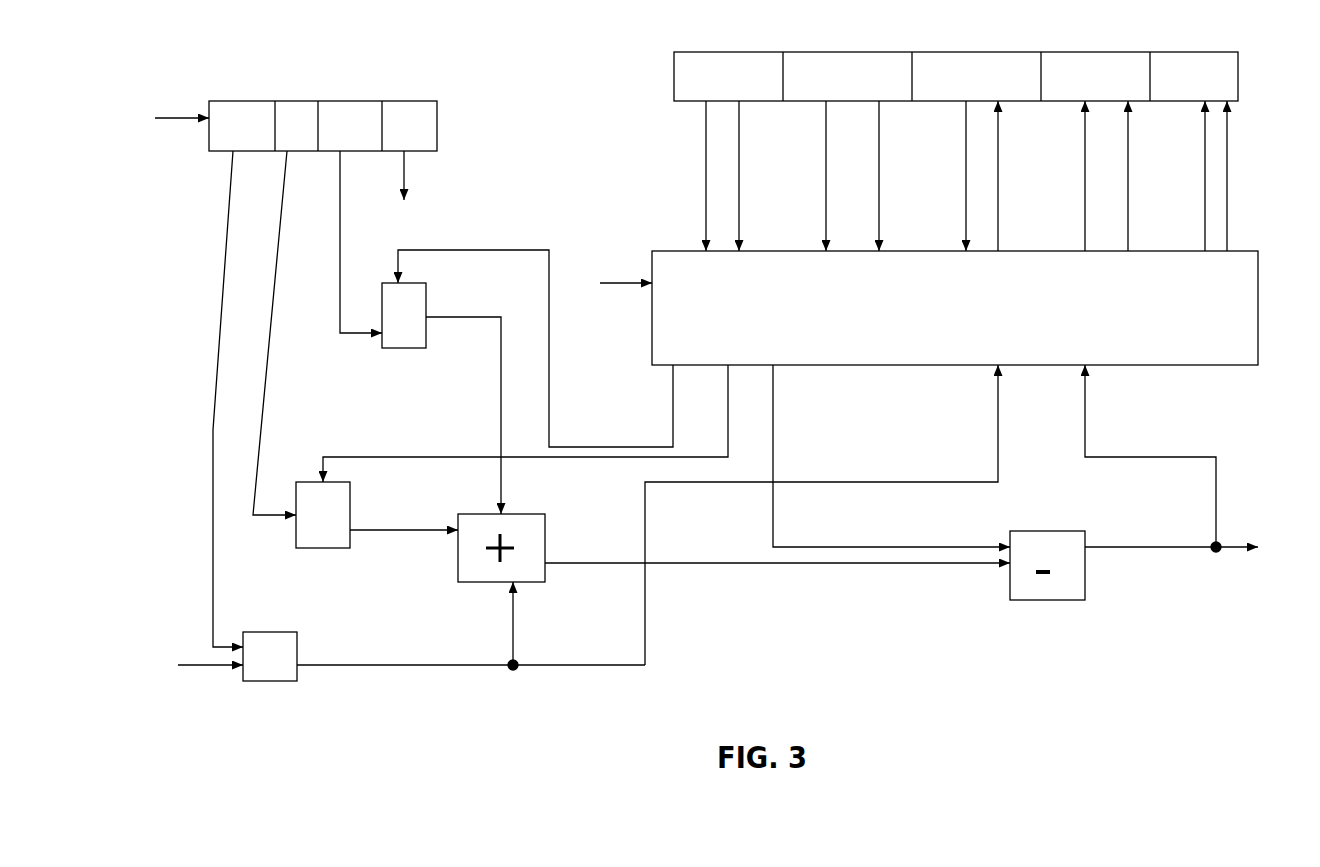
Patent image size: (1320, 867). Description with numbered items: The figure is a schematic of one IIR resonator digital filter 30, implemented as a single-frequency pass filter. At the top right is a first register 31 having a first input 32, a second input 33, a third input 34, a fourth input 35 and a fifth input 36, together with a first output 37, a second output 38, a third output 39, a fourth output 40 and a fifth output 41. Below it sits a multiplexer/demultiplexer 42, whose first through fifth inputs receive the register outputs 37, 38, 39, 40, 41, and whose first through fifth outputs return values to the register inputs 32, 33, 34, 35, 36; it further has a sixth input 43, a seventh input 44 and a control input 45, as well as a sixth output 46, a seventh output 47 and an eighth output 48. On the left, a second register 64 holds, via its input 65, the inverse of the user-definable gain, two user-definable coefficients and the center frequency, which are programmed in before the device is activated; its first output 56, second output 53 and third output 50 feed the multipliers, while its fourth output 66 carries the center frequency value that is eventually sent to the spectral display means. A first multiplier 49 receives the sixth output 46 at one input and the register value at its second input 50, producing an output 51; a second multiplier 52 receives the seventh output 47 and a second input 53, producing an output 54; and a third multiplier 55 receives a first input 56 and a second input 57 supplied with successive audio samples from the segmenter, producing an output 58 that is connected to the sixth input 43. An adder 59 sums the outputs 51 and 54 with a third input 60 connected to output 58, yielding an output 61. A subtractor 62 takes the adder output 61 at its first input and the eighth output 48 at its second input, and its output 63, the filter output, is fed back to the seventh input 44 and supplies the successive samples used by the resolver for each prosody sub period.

The IIR resonator digital filter 30 is at (1184, 663).
The first register 31 is at (674, 68).
The first input 32 is at (998, 118).
The second input 33 is at (1085, 201).
The third input 34 is at (1128, 118).
The fourth input 35 is at (1205, 201).
The fifth input 36 is at (1227, 118).
The first output 37 is at (706, 201).
The second output 38 is at (739, 118).
The third output 39 is at (826, 201).
The fourth output 40 is at (879, 118).
The fifth output 41 is at (966, 201).
The multiplexer/demultiplexer 42 is at (1193, 365).
The sixth input 43 is at (998, 400).
The seventh input 44 is at (1085, 413).
The control input 45 is at (612, 284).
The sixth output 46 is at (673, 401).
The seventh output 47 is at (728, 400).
The eighth output 48 is at (773, 398).
The first multiplier 49 is at (404, 348).
The second input 50 is at (355, 333).
The output 51 is at (458, 317).
The second multiplier 52 is at (318, 548).
The second input 53 is at (265, 515).
The output 54 is at (393, 530).
The third multiplier 55 is at (276, 681).
The first input 56 is at (213, 607).
The second input 57 is at (200, 665).
The output 58 is at (370, 665).
The adder 59 is at (458, 567).
The third input 60 is at (513, 648).
The output 61 is at (804, 563).
The subtractor 62 is at (1050, 600).
The output 63 is at (1140, 547).
The second register 64 is at (360, 101).
The input 65 is at (200, 122).
The fourth output 66 is at (406, 168).